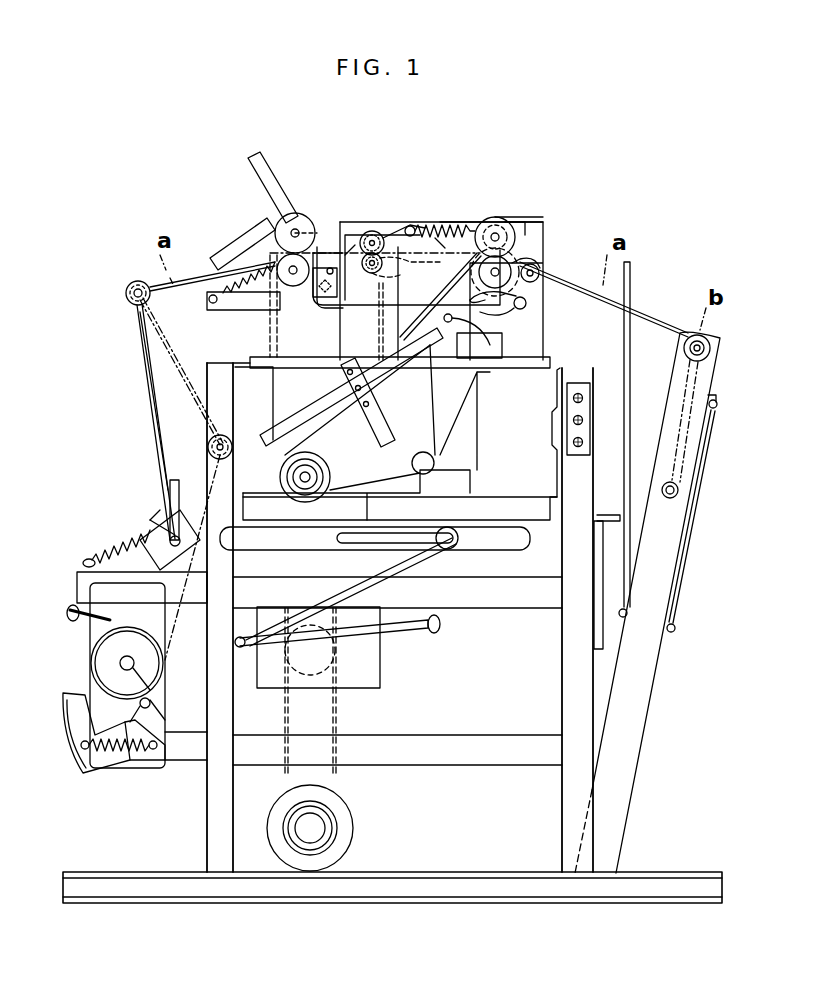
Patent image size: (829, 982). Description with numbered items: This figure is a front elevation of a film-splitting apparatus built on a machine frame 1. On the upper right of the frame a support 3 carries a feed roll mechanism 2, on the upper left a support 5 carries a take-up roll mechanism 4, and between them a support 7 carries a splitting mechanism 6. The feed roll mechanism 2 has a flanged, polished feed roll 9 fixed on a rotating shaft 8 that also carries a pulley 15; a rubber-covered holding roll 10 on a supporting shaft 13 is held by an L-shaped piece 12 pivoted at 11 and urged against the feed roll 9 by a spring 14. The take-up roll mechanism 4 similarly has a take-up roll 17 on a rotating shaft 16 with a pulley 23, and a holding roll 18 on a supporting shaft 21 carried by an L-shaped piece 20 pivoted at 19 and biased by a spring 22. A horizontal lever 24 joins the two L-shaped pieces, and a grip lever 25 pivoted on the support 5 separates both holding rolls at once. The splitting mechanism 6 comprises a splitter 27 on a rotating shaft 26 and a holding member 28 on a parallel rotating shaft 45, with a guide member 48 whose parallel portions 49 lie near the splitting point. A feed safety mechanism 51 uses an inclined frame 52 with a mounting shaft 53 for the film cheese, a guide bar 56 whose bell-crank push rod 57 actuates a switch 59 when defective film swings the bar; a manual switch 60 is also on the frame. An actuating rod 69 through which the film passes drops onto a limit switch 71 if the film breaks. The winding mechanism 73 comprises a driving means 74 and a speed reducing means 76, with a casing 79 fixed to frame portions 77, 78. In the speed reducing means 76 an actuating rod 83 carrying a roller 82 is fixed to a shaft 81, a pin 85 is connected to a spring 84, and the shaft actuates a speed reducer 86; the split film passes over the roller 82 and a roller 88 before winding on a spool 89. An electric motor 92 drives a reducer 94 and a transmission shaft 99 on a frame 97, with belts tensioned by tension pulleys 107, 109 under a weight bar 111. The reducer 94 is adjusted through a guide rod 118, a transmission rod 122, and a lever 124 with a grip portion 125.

The machine frame 1 is at (590, 680).
The feed roll mechanism 2 is at (536, 218).
The support 3 is at (543, 340).
The take-up roll mechanism 4 is at (320, 236).
The support 5 is at (252, 357).
The splitting mechanism 6 is at (390, 230).
The support 7 is at (380, 300).
The rotating shaft 8 is at (533, 268).
The feed roll 9 is at (518, 296).
The holding roll 10 is at (500, 236).
The pivot 11 is at (540, 280).
The L-shaped piece 12 is at (543, 226).
The supporting shaft 13 is at (512, 225).
The spring 14 is at (497, 217).
The pulley 15 is at (480, 278).
The rotating shaft 16 is at (296, 286).
The take-up roll 17 is at (240, 262).
The holding roll 18 is at (297, 213).
The pivot 19 is at (335, 274).
The L-shaped piece 20 is at (330, 250).
The supporting shaft 21 is at (295, 228).
The spring 22 is at (262, 262).
The pulley 23 is at (250, 308).
The horizontal lever 24 is at (452, 232).
The grip lever 25 is at (260, 165).
The rotating shaft 26 is at (400, 262).
The splitter 27 is at (396, 276).
The holding member 28 is at (374, 230).
The rotating shaft 45 is at (395, 240).
The guide member 48 is at (384, 253).
The parallel portions 49 is at (355, 240).
The feed safety mechanism 51 is at (658, 583).
The inclined frame 52 is at (652, 655).
The mounting shaft 53 is at (683, 348).
The guide bar 56 is at (632, 270).
The bell-crank push rod 57 is at (606, 514).
The switch 59 is at (598, 528).
The manual switch 60 is at (588, 395).
The actuating rod 69 is at (494, 312).
The limit switch 71 is at (490, 372).
The winding mechanism 73 is at (158, 478).
The driving means 74 is at (125, 775).
The speed reducing means 76 is at (145, 378).
The frame portion 77 is at (168, 615).
The frame portion 78 is at (185, 763).
The casing 79 is at (163, 668).
The shaft 81 is at (148, 516).
The roller 82 is at (128, 288).
The actuating rod 83 is at (150, 403).
The spring 84 is at (94, 560).
The pin 85 is at (162, 518).
The speed reducer 86 is at (178, 488).
The roller 88 is at (210, 440).
The spool 89 is at (150, 703).
The electric motor 92 is at (354, 822).
The reducer 94 is at (380, 660).
The frame 97 is at (522, 512).
The transmission shaft 99 is at (300, 477).
The tension pulley 107 is at (378, 400).
The tension pulley 109 is at (425, 455).
The weight bar 111 is at (315, 415).
The guide rod 118 is at (500, 548).
The transmission rod 122 is at (405, 632).
The lever 124 is at (386, 568).
The grip portion 125 is at (450, 548).